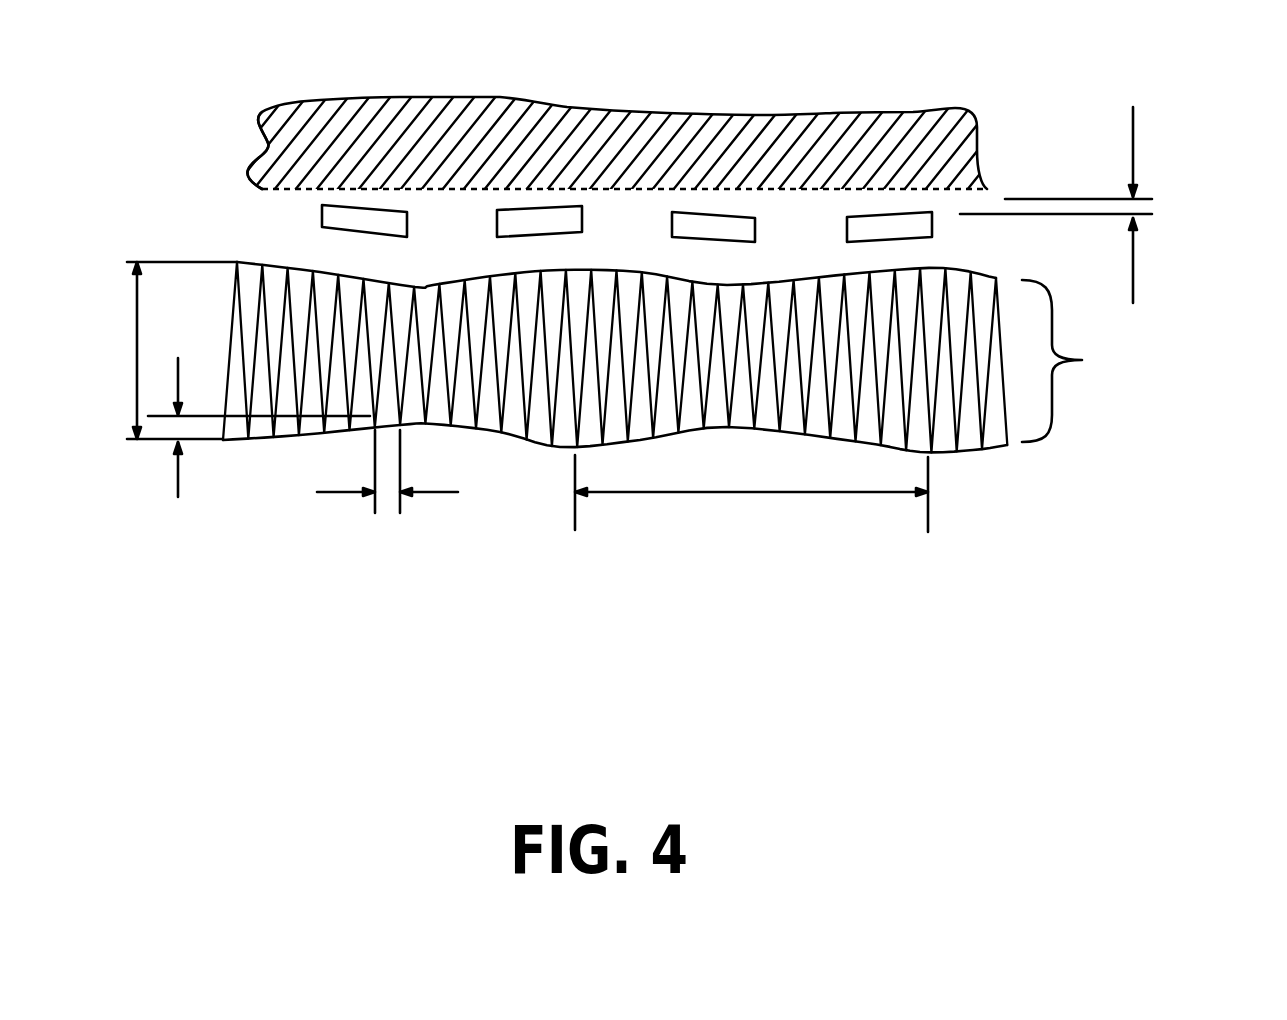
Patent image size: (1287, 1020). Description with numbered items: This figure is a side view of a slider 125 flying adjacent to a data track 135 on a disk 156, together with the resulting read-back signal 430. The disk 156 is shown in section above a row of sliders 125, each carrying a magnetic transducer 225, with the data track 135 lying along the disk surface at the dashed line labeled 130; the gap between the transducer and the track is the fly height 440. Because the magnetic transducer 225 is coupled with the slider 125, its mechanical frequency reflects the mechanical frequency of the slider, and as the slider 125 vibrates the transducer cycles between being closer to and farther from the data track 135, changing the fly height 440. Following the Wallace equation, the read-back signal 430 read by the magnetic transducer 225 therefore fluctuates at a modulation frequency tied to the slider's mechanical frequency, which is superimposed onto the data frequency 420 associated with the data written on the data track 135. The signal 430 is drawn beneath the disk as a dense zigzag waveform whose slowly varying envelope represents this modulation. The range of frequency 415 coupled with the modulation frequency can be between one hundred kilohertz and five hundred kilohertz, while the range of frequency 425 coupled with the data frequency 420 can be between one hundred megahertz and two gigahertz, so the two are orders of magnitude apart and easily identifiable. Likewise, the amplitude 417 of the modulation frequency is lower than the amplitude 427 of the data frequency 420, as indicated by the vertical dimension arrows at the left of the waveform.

The disk 156 is at (317, 132).
The data track 135 is at (257, 188).
The substrate surface 130 is at (293, 192).
The slider 125 is at (355, 218).
The magnetic transducer 225 is at (407, 218).
The fly height 440 is at (1130, 145).
The data frequency 420 is at (997, 310).
The read-back signal 430 is at (1085, 359).
The range of frequency 415 is at (717, 492).
The range of frequency 425 is at (440, 492).
The amplitude 427 is at (138, 327).
The amplitude 417 is at (178, 480).